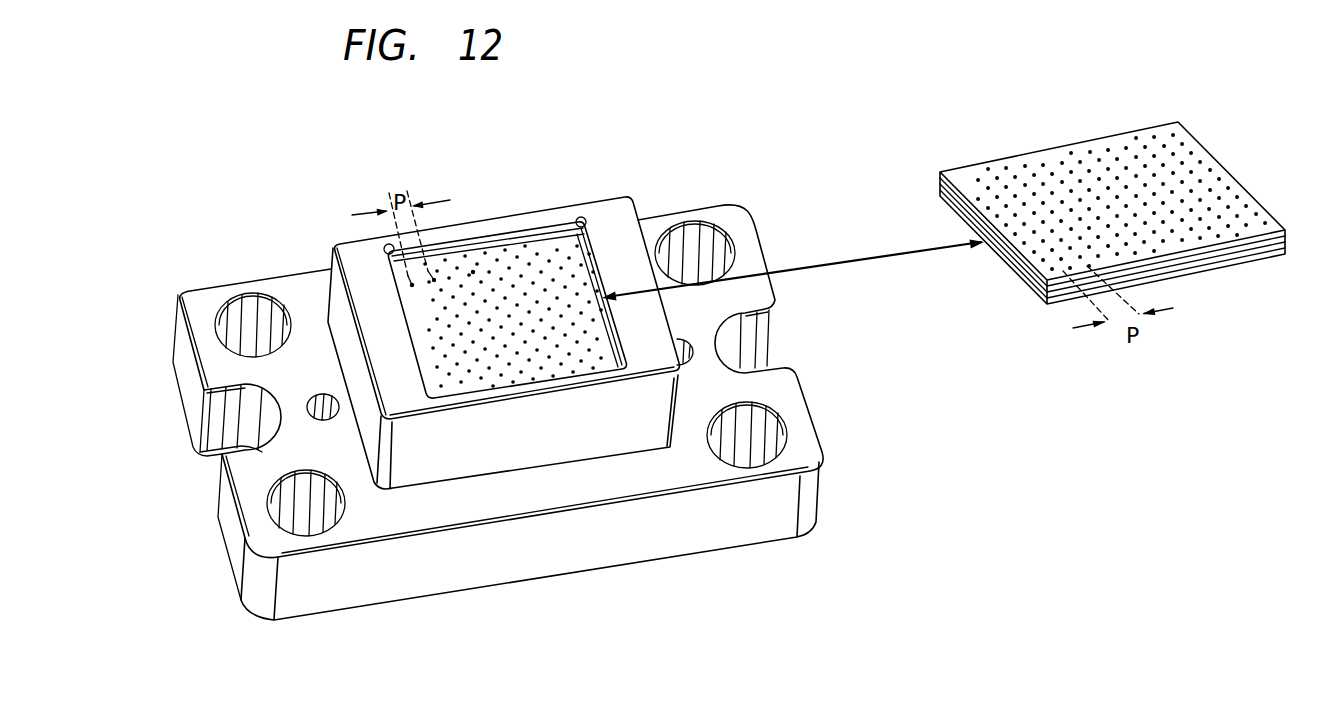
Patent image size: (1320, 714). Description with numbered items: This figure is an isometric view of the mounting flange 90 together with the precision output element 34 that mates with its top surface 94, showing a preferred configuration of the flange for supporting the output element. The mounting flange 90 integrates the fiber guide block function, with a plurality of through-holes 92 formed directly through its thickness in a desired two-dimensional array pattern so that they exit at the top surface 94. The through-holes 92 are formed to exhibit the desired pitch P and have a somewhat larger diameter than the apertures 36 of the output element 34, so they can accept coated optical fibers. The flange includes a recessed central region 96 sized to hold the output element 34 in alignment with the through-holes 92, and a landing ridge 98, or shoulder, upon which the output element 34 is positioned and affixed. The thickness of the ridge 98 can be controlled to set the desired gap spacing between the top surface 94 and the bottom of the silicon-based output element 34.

The mounting flange 90 is at (222, 281).
The top surface 94 is at (624, 207).
The landing ridge 98 is at (582, 224).
The through-holes 92 is at (525, 250).
The recessed central region 96 is at (473, 271).
The precision output element 34 is at (1198, 158).
The apertures 36 is at (1010, 165).